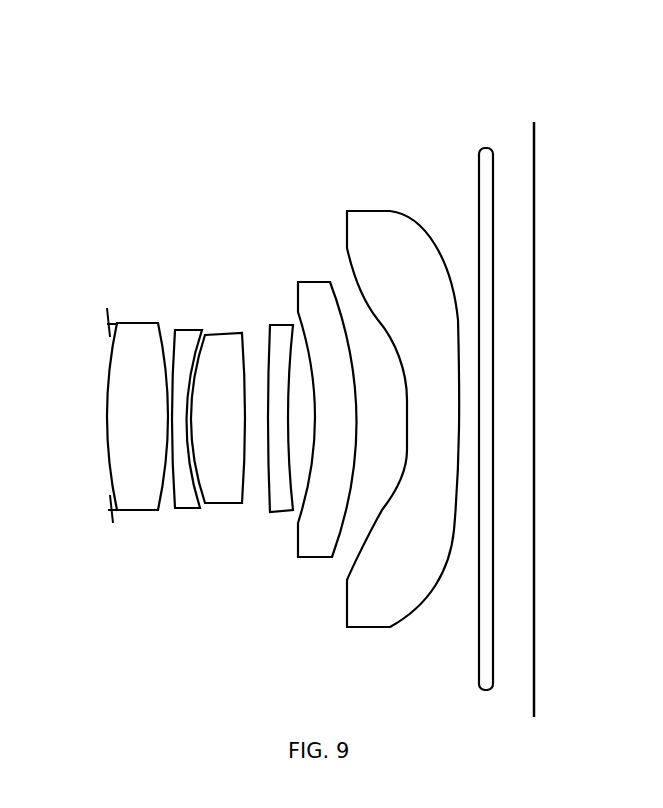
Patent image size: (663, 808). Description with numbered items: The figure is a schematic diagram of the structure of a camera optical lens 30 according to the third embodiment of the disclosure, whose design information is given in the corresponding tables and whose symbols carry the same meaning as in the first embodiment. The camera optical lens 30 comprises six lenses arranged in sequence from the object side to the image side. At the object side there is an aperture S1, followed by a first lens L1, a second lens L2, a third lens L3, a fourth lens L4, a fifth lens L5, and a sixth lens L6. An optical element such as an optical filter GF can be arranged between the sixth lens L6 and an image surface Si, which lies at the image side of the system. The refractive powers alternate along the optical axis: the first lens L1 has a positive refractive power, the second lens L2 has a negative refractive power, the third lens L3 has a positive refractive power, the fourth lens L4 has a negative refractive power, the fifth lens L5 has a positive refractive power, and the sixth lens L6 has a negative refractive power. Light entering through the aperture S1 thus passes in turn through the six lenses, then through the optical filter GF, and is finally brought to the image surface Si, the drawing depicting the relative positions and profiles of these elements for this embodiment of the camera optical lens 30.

The camera optical lens 30 is at (338, 69).
The aperture S1 is at (90, 405).
The first lens L1 is at (137, 403).
The second lens L2 is at (187, 403).
The third lens L3 is at (218, 401).
The fourth lens L4 is at (279, 404).
The fifth lens L5 is at (327, 404).
The sixth lens L6 is at (403, 403).
The optical filter GF is at (490, 407).
The image surface Si is at (535, 403).